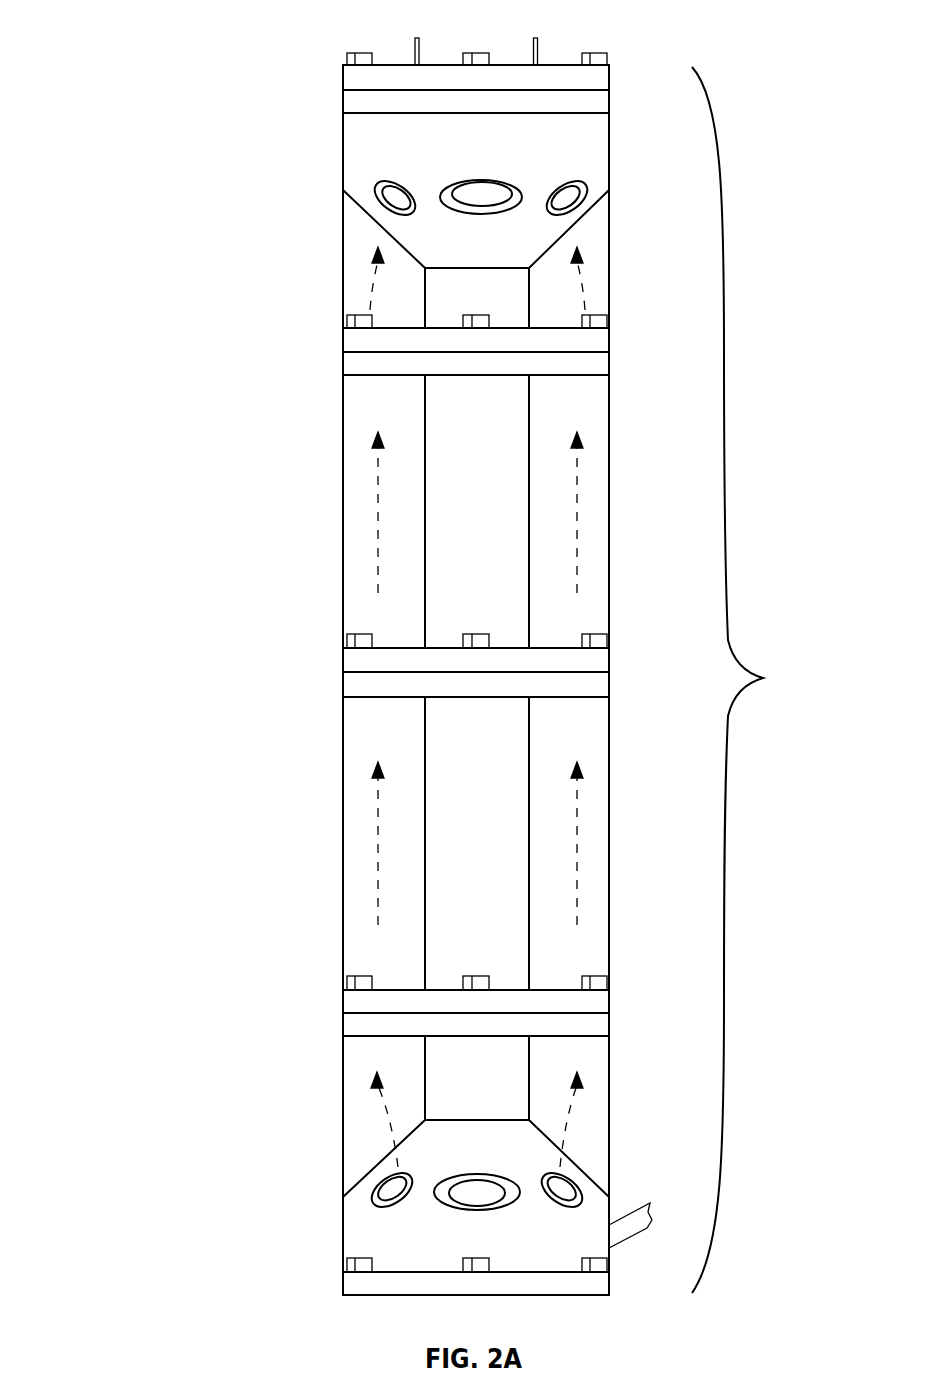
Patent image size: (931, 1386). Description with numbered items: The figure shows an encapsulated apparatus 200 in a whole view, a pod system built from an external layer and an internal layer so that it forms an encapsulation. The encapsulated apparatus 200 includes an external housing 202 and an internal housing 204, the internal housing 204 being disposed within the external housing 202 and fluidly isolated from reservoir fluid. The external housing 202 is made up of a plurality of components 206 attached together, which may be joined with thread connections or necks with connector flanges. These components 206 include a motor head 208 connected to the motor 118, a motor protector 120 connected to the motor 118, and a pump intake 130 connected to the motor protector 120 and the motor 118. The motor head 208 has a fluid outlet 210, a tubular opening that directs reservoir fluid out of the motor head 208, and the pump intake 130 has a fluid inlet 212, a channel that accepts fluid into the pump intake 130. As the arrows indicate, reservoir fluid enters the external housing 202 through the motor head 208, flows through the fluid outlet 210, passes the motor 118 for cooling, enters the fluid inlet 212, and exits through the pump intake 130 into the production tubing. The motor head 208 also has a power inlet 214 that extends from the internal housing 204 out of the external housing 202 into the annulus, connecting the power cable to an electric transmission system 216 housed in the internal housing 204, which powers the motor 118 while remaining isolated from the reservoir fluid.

The encapsulated apparatus 200 is at (136, 22).
The pump intake 130 is at (343, 152).
The fluid inlet 212 is at (485, 200).
The motor protector 120 is at (425, 507).
The internal housing 204 is at (416, 750).
The motor 118 is at (425, 843).
The external housing 202 is at (334, 936).
The electric transmission system 216 is at (454, 1086).
The motor head 208 is at (343, 1245).
The fluid outlet 210 is at (485, 1195).
The power inlet 214 is at (618, 1222).
The components 206 is at (751, 680).